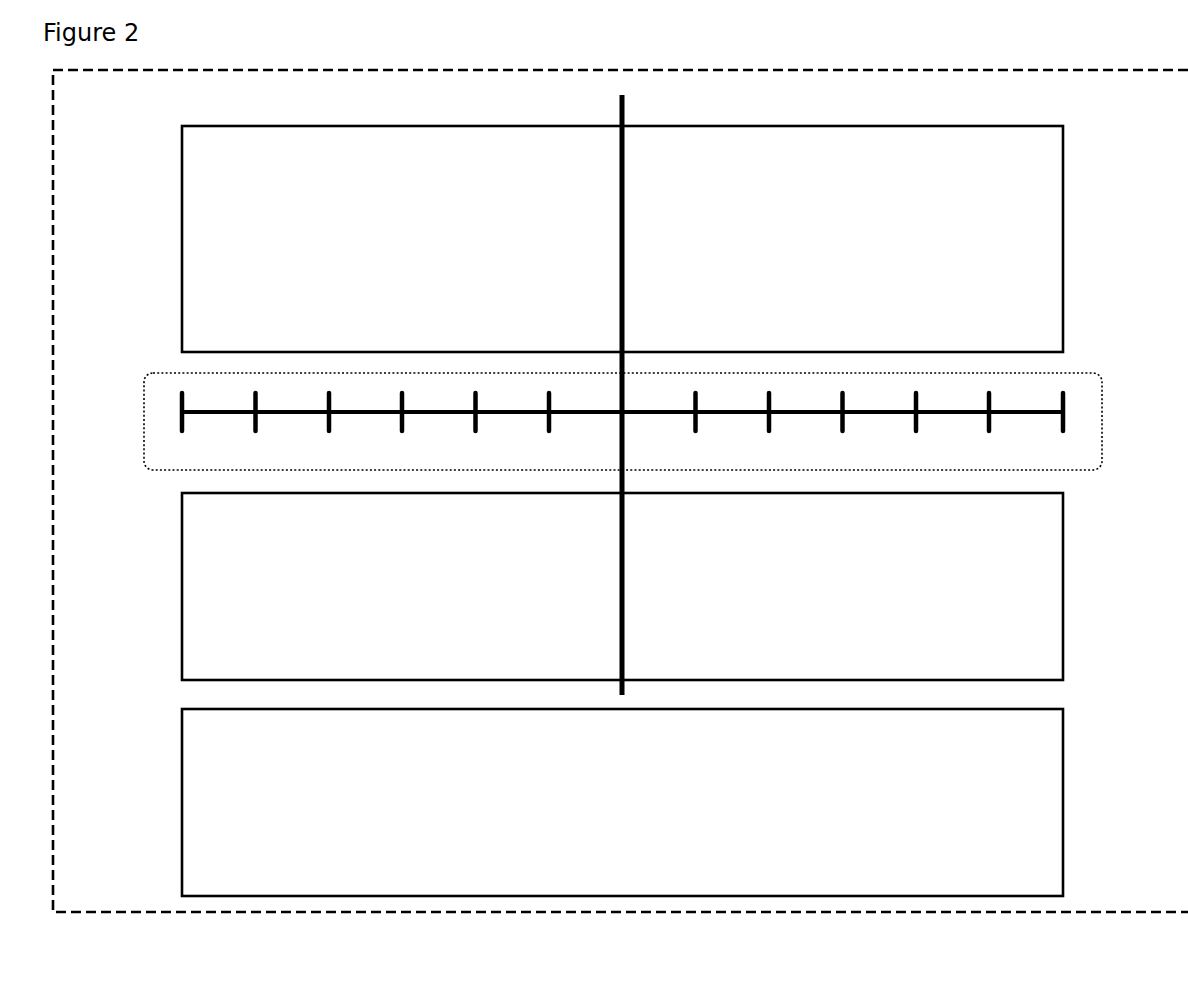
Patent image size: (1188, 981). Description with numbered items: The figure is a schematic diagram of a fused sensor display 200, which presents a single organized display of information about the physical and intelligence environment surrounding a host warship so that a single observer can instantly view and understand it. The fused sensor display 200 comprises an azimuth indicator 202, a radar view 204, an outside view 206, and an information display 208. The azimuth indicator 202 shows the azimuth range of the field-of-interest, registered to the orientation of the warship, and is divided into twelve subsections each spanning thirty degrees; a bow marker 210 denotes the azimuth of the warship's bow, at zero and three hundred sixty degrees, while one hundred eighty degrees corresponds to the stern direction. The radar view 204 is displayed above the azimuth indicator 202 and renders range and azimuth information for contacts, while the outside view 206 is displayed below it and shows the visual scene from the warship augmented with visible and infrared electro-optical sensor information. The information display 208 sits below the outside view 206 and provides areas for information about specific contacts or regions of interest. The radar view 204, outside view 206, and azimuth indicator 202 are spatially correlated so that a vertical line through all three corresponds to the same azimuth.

The fused sensor display 200 is at (93, 104).
The azimuth indicator 202 is at (595, 396).
The radar view 204 is at (576, 239).
The outside view 206 is at (576, 586).
The information display 208 is at (576, 802).
The bow marker 210 is at (587, 389).